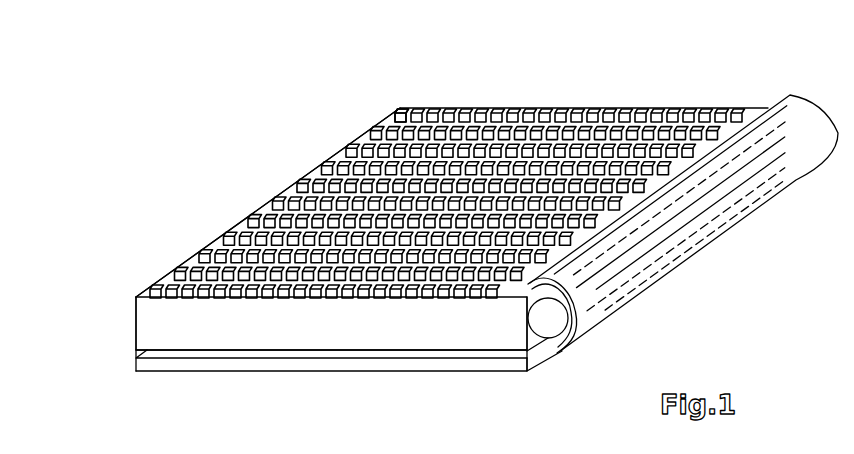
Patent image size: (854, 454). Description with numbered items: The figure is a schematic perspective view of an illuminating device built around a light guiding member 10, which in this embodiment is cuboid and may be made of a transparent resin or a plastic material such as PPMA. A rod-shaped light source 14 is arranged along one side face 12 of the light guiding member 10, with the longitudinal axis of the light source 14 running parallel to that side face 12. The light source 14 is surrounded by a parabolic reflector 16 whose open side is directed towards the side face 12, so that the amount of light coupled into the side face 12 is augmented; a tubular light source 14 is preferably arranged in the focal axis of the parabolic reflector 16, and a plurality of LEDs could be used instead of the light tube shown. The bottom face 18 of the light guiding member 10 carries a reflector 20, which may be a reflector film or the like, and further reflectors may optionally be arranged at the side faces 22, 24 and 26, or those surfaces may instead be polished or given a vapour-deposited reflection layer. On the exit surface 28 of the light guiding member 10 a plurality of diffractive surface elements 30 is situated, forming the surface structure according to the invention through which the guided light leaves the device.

The light guiding member 10 is at (112, 359).
The side face 12 is at (513, 331).
The light source 14 is at (548, 328).
The parabolic reflector 16 is at (587, 305).
The bottom face 18 is at (273, 351).
The reflector 20 is at (385, 365).
The side face 22 is at (220, 323).
The side face 24 is at (272, 201).
The side face 26 is at (435, 110).
The exit surface 28 is at (370, 135).
The diffractive surface elements 30 is at (617, 110).